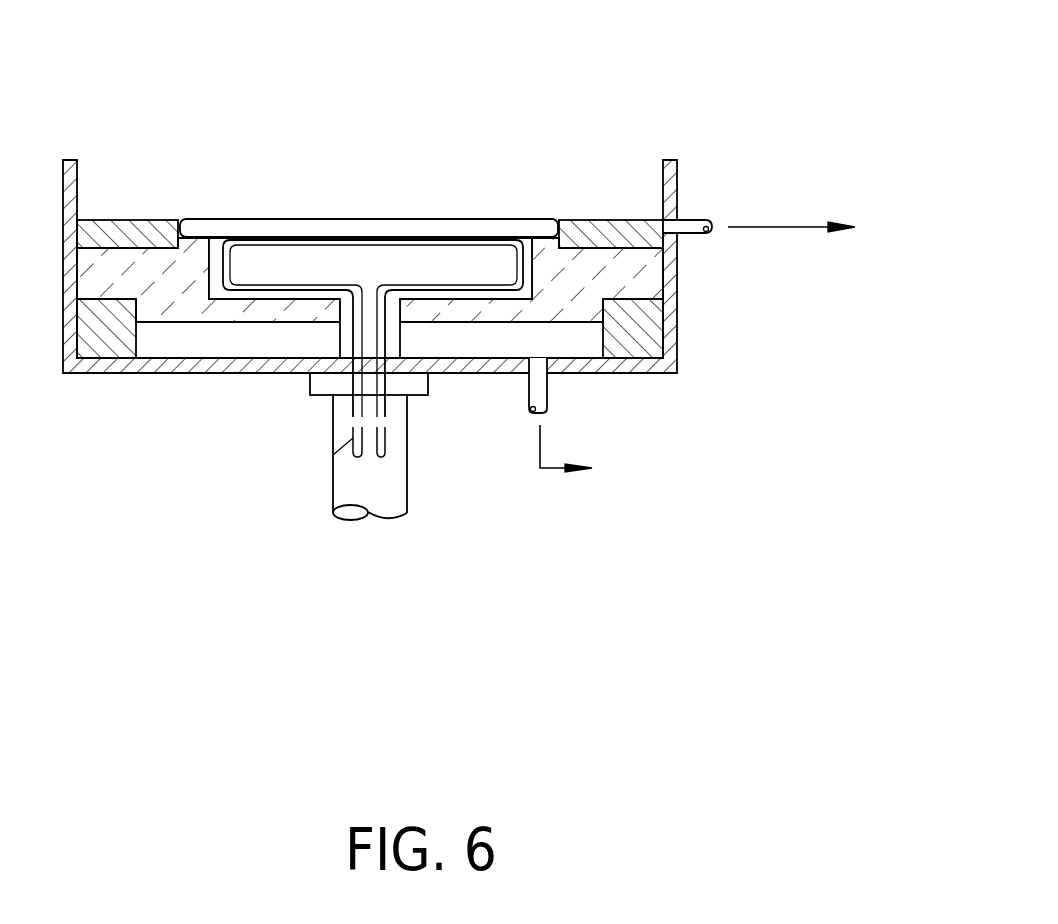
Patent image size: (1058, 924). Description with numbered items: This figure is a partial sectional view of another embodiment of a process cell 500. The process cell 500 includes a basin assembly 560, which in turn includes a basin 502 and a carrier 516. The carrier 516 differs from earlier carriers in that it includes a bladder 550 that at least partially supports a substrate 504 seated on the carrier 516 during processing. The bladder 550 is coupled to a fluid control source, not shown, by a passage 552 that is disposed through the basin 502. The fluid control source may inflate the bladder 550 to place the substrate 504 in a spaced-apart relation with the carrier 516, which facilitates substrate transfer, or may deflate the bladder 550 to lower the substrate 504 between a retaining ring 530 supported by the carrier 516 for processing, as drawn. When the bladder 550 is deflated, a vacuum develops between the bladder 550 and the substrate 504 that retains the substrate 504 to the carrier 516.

The process cell 500 is at (361, 66).
The basin 502 is at (677, 338).
The substrate 504 is at (362, 227).
The carrier 516 is at (580, 284).
The retaining ring 530 is at (118, 235).
The bladder 550 is at (418, 240).
The passage 552 is at (322, 457).
The basin assembly 560 is at (736, 165).